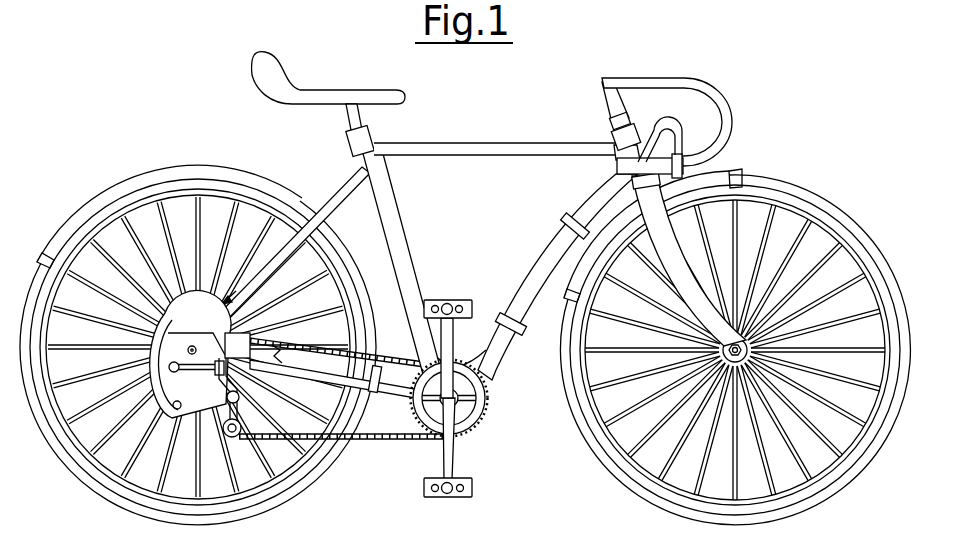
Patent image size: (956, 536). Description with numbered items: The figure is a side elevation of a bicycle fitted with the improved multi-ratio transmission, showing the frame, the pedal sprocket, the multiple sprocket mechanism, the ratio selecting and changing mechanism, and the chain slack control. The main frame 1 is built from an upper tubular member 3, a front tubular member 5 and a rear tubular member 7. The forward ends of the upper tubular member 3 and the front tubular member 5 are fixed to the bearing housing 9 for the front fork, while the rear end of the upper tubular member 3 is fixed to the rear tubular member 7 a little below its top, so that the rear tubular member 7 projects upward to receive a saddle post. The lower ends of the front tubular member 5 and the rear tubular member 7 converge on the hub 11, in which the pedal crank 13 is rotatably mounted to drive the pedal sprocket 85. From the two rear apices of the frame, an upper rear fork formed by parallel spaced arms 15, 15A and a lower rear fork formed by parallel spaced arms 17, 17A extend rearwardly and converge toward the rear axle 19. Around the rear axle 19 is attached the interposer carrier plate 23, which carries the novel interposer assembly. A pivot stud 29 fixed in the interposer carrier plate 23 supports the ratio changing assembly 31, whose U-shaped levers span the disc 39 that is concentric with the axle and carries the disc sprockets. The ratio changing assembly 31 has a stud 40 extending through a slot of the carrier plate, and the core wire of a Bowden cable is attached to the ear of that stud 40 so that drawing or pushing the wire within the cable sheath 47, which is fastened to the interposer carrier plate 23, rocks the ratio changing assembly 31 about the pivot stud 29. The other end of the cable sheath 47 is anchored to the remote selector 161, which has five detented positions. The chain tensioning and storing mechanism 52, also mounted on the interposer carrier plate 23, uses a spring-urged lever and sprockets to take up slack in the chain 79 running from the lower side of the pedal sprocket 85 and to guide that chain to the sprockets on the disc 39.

The main frame 1 is at (546, 144).
The upper tubular member 3 is at (466, 143).
The front tubular member 5 is at (592, 205).
The rear tubular member 7 is at (392, 204).
The bearing housing 9 is at (637, 118).
The hub 11 is at (472, 388).
The pedal crank 13 is at (453, 453).
The upper rear fork arm 15 is at (323, 198).
The upper rear fork arm 15A is at (271, 224).
The lower rear fork arm 17 is at (386, 391).
The lower rear fork arm 17A is at (388, 393).
The rear axle 19 is at (189, 350).
The interposer carrier plate 23 is at (165, 390).
The pivot stud 29 is at (175, 409).
The ratio changing assembly 31 is at (241, 335).
The disc 39 is at (182, 310).
The stud 40 is at (168, 367).
The cable sheath 47 is at (546, 258).
The chain tensioning and storing mechanism 52 is at (239, 412).
The chain 79 is at (349, 441).
The pedal sprocket 85 is at (486, 413).
The selector 161 is at (617, 166).